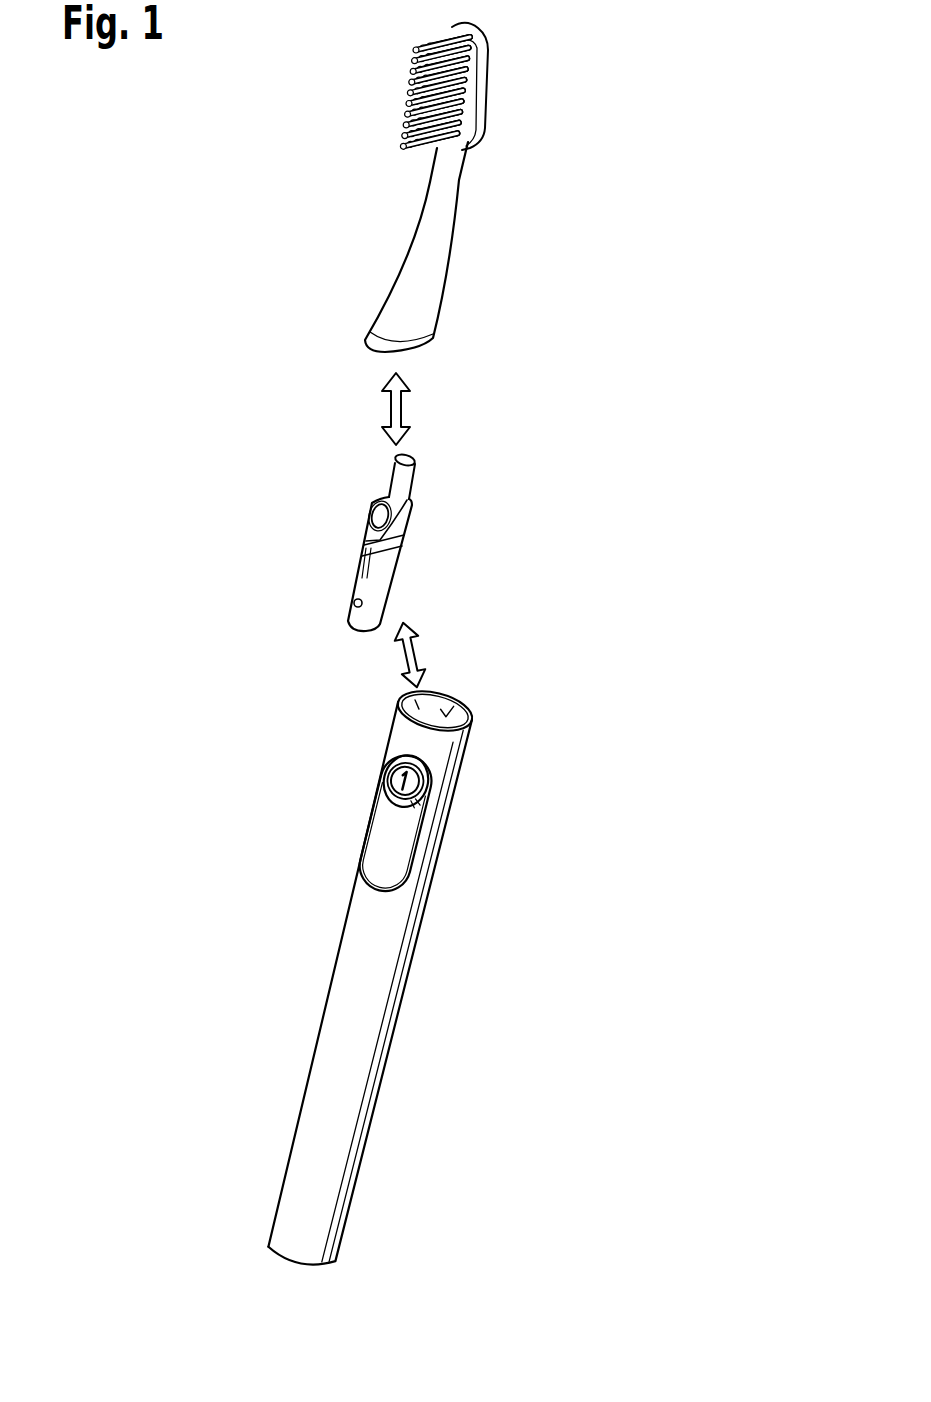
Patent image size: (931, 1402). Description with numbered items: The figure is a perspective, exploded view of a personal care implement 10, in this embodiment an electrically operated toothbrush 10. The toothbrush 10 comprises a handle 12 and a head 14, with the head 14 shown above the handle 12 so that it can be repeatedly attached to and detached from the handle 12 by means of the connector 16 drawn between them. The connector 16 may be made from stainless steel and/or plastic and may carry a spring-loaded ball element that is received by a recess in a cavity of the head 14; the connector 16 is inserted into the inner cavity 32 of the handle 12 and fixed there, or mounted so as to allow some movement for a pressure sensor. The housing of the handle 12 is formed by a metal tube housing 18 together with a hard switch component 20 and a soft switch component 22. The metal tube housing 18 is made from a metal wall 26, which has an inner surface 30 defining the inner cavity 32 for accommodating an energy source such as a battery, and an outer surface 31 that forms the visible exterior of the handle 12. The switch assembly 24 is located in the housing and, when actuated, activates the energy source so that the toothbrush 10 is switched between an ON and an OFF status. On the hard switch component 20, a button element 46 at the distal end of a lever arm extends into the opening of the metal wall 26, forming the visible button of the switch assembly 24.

The personal care implement 10 is at (614, 220).
The handle 12 is at (372, 1083).
The head 14 is at (425, 256).
The connector 16 is at (382, 577).
The metal tube housing 18 is at (385, 946).
The hard switch component 20 is at (392, 770).
The soft switch component 22 is at (380, 867).
The switch assembly 24 is at (352, 828).
The metal wall 26 is at (320, 1176).
The inner surface 30 is at (453, 692).
The outer surface 31 is at (333, 1110).
The inner cavity 32 is at (405, 693).
The button element 46 is at (422, 783).